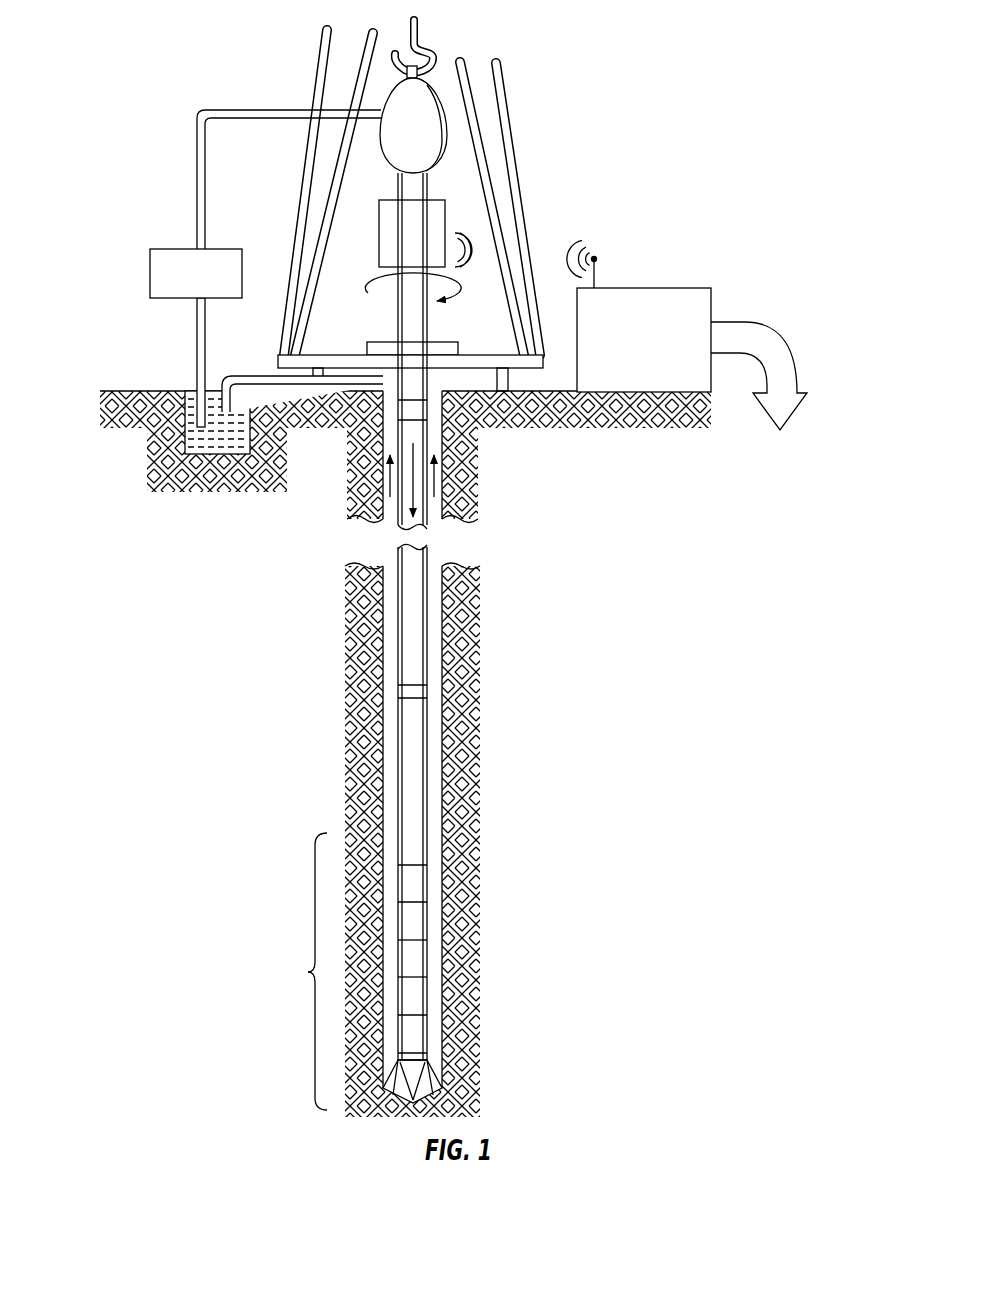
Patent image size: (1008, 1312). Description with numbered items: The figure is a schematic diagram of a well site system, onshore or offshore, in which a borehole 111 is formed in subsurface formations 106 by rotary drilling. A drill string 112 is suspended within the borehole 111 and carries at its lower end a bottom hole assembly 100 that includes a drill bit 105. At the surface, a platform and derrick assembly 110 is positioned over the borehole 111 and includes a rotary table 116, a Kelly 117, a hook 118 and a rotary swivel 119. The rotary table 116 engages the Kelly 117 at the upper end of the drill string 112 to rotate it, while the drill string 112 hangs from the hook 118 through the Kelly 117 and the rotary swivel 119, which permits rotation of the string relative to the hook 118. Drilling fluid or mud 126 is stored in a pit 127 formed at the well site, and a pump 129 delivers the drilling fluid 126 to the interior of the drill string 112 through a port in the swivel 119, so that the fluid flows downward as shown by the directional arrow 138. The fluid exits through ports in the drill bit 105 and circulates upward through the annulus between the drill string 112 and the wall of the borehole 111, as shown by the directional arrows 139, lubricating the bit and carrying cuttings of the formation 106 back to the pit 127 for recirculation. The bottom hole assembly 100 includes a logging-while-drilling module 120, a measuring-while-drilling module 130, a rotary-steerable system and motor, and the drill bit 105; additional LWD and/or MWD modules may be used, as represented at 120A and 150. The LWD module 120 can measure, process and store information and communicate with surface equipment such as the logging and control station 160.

The bottom hole assembly 100 is at (346, 828).
The drill bit 105 is at (413, 1078).
The subsurface formations 106 is at (463, 735).
The platform and derrick assembly 110 is at (538, 124).
The borehole 111 is at (456, 348).
The drill string 112 is at (410, 383).
The rotary table 116 is at (435, 382).
The Kelly 117 is at (412, 318).
The hook 118 is at (421, 32).
The rotary swivel 119 is at (408, 143).
The logging-while-drilling (LWD) module 120 is at (413, 920).
The LWD module 120A is at (413, 995).
The drilling fluid or mud 126 is at (215, 448).
The pit 127 is at (188, 388).
The pump 129 is at (168, 298).
The measuring-while-drilling (MWD) module 130 is at (413, 958).
The directional arrow 138 is at (412, 496).
The directional arrows 139 is at (390, 475).
The LWD/MWD module 150 is at (413, 1035).
The logging and control station 160 is at (623, 288).